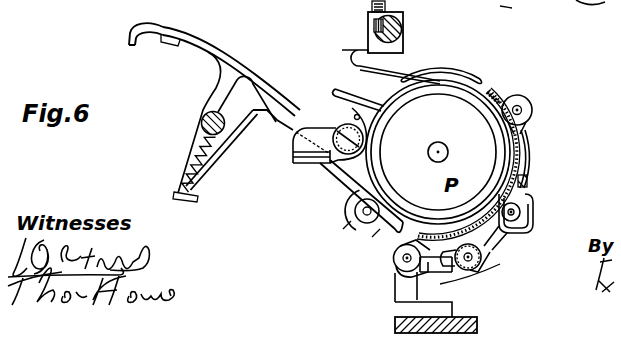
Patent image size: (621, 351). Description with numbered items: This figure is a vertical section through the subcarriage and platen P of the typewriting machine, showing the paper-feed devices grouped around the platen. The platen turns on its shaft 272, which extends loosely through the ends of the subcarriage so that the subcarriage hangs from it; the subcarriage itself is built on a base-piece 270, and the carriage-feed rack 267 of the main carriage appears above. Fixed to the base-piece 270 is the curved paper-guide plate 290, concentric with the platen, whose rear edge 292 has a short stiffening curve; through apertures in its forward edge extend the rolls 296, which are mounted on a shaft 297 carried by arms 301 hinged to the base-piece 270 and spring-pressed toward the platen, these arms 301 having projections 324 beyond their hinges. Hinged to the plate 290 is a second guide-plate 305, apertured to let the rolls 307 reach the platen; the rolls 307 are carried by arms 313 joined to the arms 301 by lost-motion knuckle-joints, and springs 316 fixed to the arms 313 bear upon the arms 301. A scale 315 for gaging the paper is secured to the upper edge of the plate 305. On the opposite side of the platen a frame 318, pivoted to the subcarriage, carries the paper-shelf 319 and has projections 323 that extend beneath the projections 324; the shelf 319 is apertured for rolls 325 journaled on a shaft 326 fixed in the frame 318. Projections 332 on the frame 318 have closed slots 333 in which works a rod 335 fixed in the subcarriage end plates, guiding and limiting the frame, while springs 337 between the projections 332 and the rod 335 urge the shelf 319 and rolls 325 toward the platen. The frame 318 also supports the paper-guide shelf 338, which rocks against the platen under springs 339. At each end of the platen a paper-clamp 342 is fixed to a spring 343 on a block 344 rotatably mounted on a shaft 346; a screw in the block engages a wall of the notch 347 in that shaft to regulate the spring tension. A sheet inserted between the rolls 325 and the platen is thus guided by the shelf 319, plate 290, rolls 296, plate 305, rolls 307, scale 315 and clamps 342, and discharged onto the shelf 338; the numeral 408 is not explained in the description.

The carriage-feed rack 267 is at (530, 10).
The base-piece 270 is at (395, 323).
The platen shaft 272 is at (440, 144).
The paper-guide plate 290 is at (490, 262).
The rear edge 292 is at (389, 264).
The rolls 296 is at (533, 206).
The shaft 297 is at (534, 222).
The arms 301 is at (528, 264).
The guide-plate 305 is at (528, 155).
The rolls 307 is at (533, 108).
The arms 313 is at (530, 145).
The scale 315 is at (492, 96).
The springs 316 is at (530, 168).
The frame 318 is at (172, 44).
The paper-shelf 319 is at (250, 60).
The projections 323 is at (430, 268).
The projections 324 is at (481, 263).
The rolls 325 is at (390, 232).
The shaft 326 is at (353, 215).
The projections 332 is at (230, 144).
The closed slots 333 is at (224, 100).
The rod 335 is at (201, 125).
The springs 337 is at (201, 181).
The paper-guide shelf 338 is at (341, 92).
The springs 339 is at (354, 116).
The paper-clamp 342 is at (444, 78).
The spring 343 is at (400, 70).
The block 344 is at (406, 14).
The shaft 346 is at (376, 33).
The notch 347 is at (372, 14).
The member 408 is at (592, 4).